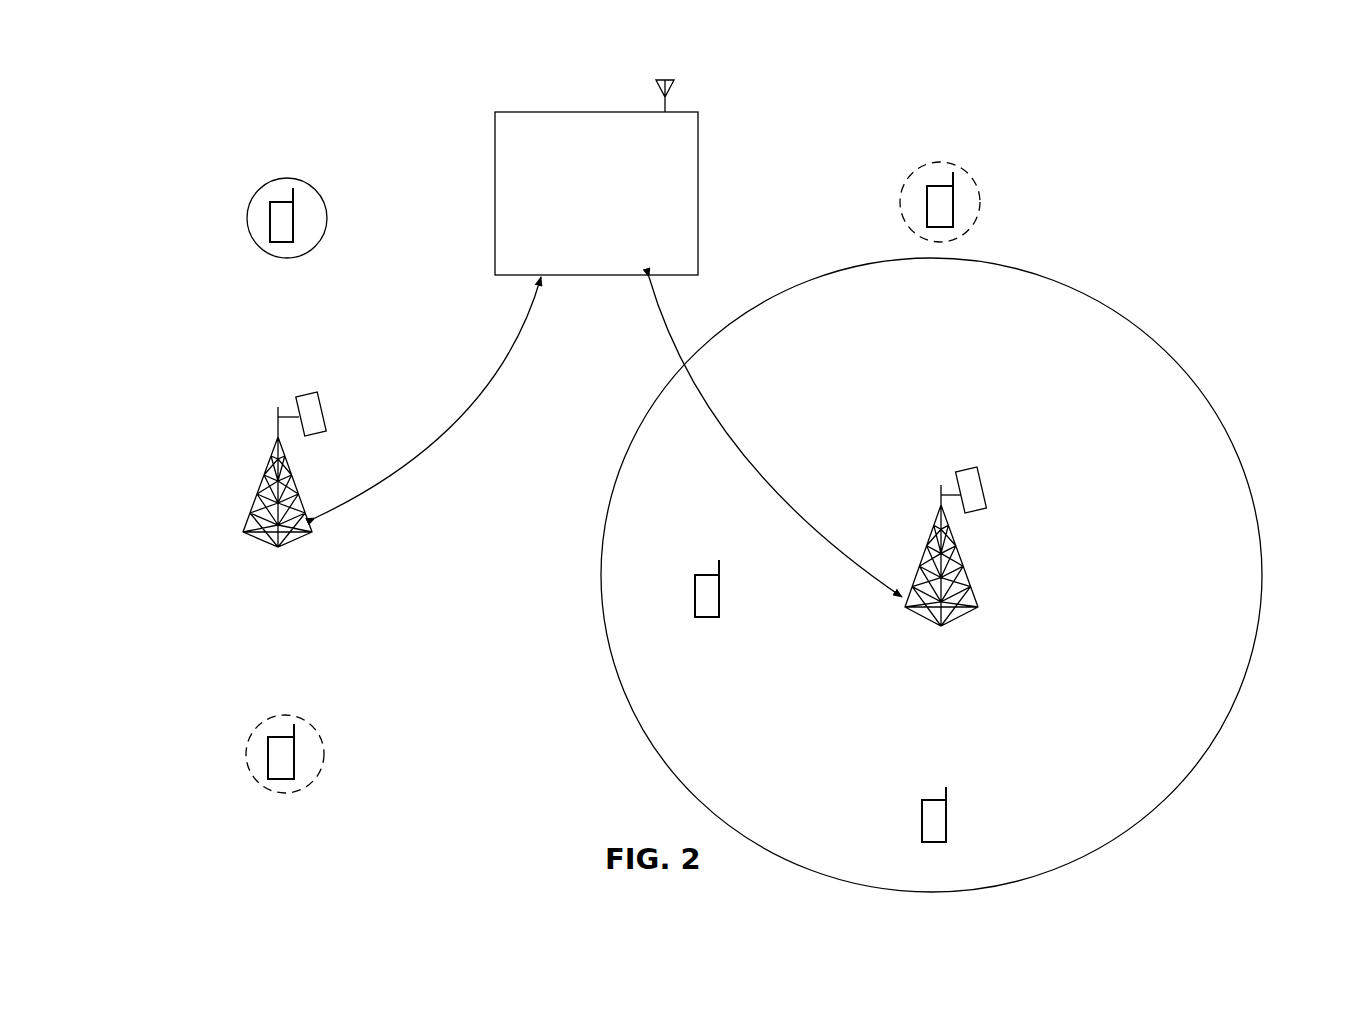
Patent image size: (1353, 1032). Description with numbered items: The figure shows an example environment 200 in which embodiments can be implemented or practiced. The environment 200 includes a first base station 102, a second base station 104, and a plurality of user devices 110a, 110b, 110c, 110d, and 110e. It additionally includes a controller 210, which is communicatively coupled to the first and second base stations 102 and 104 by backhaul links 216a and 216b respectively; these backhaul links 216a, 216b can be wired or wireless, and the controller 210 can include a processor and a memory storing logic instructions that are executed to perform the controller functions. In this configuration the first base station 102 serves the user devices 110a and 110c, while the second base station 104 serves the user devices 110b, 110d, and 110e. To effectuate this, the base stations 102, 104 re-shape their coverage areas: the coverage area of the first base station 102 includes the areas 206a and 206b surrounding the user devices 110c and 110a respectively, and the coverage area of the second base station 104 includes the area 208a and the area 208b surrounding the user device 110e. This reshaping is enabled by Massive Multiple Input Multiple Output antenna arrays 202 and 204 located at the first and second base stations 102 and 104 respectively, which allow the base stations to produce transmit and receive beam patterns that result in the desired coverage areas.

The example environment 200 is at (1297, 139).
The controller 210 is at (596, 177).
The backhaul link 216a is at (494, 372).
The backhaul link 216b is at (727, 418).
The first base station 102 is at (258, 482).
The second base station 104 is at (968, 592).
The M-MIMO antenna array 202 is at (321, 403).
The M-MIMO antenna array 204 is at (984, 482).
The coverage area 208a is at (1145, 334).
The coverage area 208b is at (263, 186).
The coverage area 206a is at (262, 722).
The coverage area 206b is at (914, 174).
The user device 110a is at (953, 197).
The user device 110b is at (946, 815).
The user device 110c is at (294, 748).
The user device 110d is at (707, 620).
The user device 110e is at (293, 210).